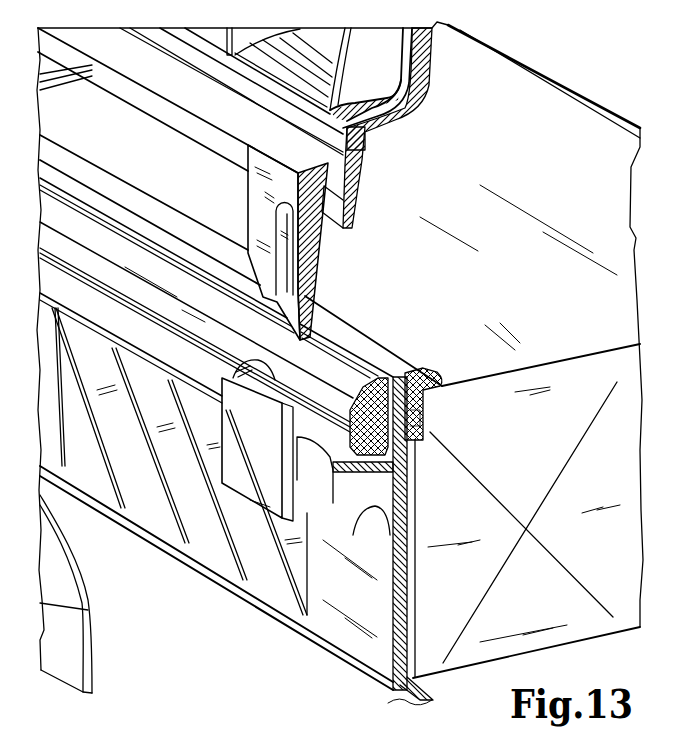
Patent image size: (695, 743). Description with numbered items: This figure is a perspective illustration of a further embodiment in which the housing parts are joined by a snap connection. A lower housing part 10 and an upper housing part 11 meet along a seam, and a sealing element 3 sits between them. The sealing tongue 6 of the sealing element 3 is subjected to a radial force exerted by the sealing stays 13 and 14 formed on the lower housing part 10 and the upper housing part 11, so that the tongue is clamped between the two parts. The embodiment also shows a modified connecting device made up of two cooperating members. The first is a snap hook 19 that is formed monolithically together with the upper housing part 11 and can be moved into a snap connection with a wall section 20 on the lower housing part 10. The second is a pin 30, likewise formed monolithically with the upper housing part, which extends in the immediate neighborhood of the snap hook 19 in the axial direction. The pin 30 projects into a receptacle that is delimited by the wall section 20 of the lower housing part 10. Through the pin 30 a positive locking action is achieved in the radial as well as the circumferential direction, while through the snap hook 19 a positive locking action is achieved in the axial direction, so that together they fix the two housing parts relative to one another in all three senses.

The sealing element 3 is at (428, 371).
The sealing tongue 6 is at (380, 377).
The lower housing part 10 is at (395, 650).
The upper housing part 11 is at (418, 53).
The sealing stay 13 is at (408, 418).
The sealing stay 14 is at (353, 167).
The snap hook 19 is at (315, 265).
The wall section 20 is at (268, 467).
The pin 30 is at (262, 225).